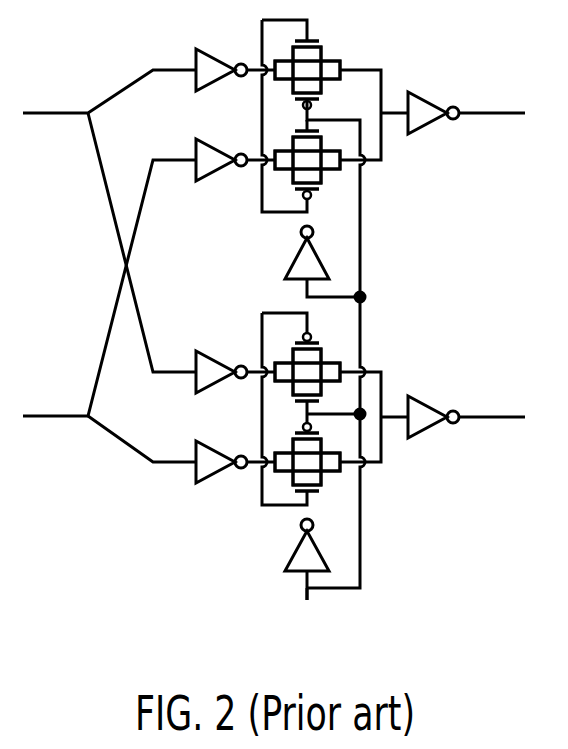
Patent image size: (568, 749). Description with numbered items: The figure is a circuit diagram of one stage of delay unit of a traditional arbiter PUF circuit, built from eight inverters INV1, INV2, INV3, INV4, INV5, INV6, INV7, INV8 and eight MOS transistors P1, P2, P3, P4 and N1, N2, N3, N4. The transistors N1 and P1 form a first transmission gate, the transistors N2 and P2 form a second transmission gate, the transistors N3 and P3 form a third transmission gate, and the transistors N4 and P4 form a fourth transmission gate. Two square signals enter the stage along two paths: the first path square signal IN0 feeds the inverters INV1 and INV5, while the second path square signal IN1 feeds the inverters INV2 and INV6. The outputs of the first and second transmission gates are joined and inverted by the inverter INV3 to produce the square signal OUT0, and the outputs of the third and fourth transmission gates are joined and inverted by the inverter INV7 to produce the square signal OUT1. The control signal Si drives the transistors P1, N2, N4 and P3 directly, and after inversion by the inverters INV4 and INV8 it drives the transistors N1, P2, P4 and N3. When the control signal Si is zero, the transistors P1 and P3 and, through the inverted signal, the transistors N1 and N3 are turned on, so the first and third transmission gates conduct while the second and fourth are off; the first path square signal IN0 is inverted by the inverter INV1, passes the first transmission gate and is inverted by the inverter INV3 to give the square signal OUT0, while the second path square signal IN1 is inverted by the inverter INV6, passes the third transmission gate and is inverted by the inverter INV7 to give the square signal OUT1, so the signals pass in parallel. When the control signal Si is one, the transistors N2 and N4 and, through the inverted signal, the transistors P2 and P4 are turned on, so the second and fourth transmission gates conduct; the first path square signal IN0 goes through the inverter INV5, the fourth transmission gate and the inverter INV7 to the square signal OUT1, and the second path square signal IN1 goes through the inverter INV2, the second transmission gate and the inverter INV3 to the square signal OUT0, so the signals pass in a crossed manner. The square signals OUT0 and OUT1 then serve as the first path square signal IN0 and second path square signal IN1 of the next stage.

The first path square signal IN0 is at (109, 221).
The second path square signal IN1 is at (109, 311).
The inverter INV1 is at (229, 55).
The inverter INV2 is at (229, 177).
The inverter INV3 is at (443, 131).
The inverter INV4 is at (273, 254).
The inverter INV5 is at (229, 358).
The inverter INV6 is at (229, 478).
The inverter INV7 is at (443, 402).
The inverter INV8 is at (274, 545).
The transistor N1 is at (314, 61).
The transistor N2 is at (315, 156).
The transistor N3 is at (315, 469).
The transistor N4 is at (315, 377).
The transistor P1 is at (313, 75).
The transistor P2 is at (313, 166).
The transistor P3 is at (313, 457).
The transistor P4 is at (313, 366).
The square signal OUT0 is at (491, 97).
The square signal OUT1 is at (491, 434).
The control signal Si is at (286, 591).